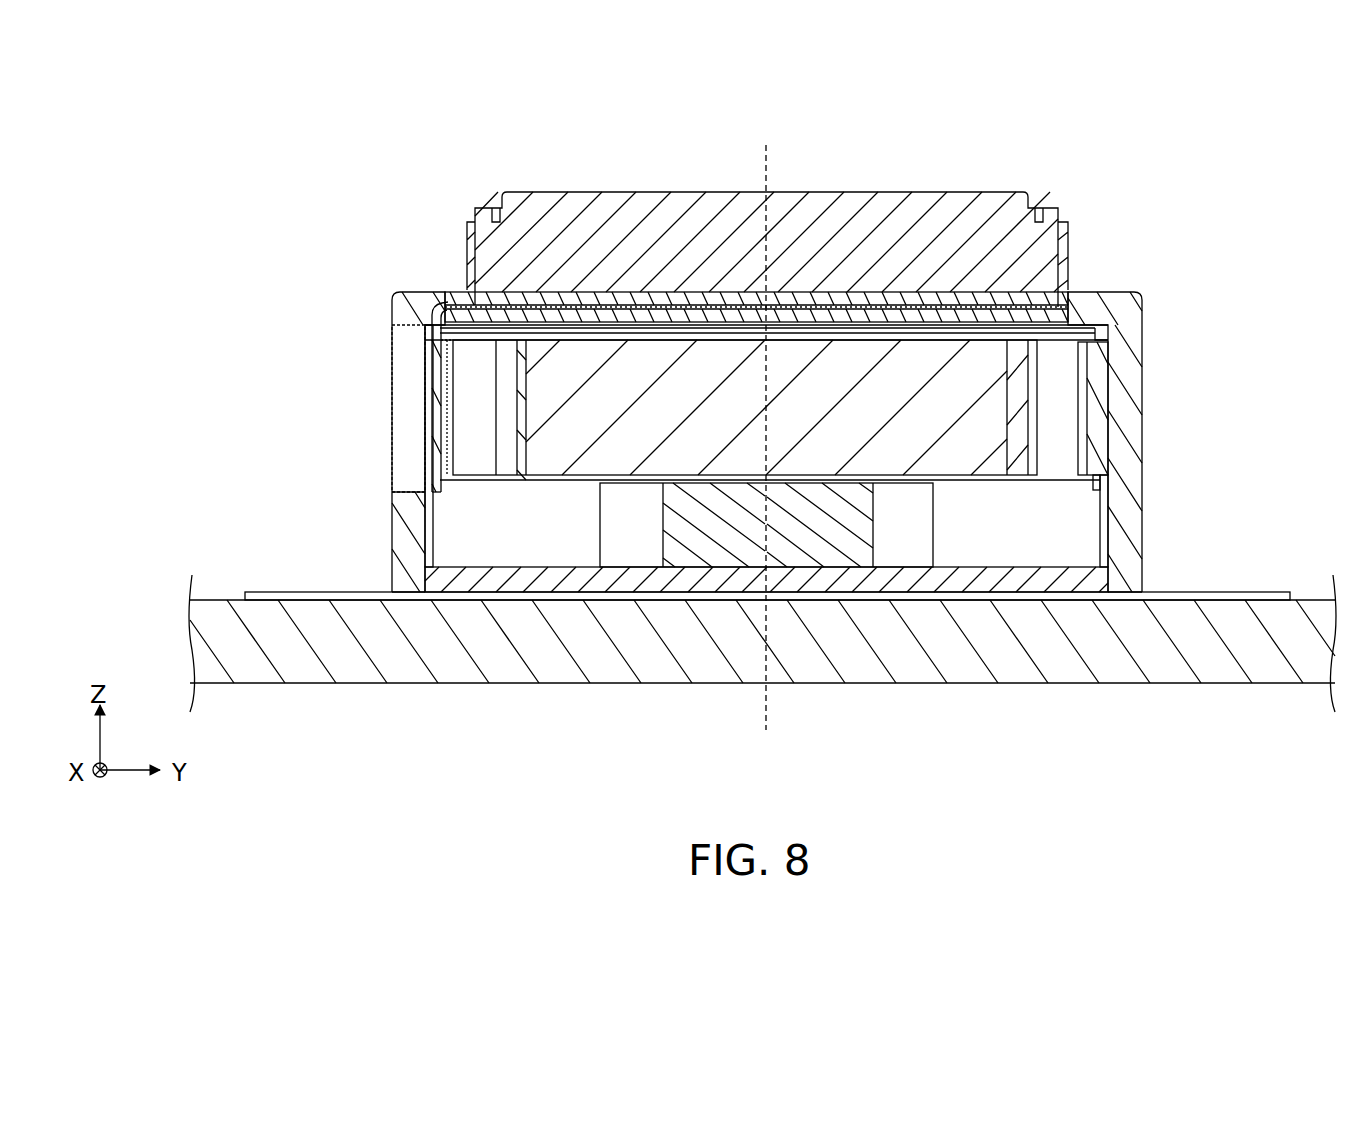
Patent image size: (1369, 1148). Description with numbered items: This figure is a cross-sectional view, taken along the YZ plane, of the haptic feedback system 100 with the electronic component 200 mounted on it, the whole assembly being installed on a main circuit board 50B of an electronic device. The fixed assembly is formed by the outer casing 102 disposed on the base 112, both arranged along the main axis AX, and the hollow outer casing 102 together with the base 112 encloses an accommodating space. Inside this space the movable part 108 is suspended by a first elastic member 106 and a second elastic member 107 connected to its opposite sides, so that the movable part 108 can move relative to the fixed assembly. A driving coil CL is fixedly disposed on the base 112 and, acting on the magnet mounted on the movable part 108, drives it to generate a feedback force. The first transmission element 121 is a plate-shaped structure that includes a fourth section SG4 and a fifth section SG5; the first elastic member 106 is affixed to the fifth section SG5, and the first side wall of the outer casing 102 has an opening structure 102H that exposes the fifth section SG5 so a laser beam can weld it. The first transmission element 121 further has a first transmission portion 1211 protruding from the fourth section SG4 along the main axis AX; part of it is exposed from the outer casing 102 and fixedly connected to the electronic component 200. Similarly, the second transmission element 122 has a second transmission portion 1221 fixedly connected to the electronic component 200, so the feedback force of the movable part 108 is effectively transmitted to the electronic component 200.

The haptic feedback system 100 is at (1168, 310).
The outer casing 102 is at (405, 308).
The opening structure 102H is at (410, 492).
The first elastic member 106 is at (437, 437).
The second elastic member 107 is at (1100, 442).
The movable part 108 is at (975, 393).
The base 112 is at (1095, 582).
The first transmission element 121 is at (537, 298).
The second transmission element 122 is at (734, 249).
The second transmission portion 1221 is at (468, 260).
The first transmission portion 1211 is at (1062, 260).
The electronic component 200 is at (734, 222).
The main circuit board 50B is at (1265, 615).
The main axis AX is at (763, 424).
The driving coil CL is at (905, 512).
The fourth section SG4 is at (648, 298).
The fifth section SG5 is at (440, 378).